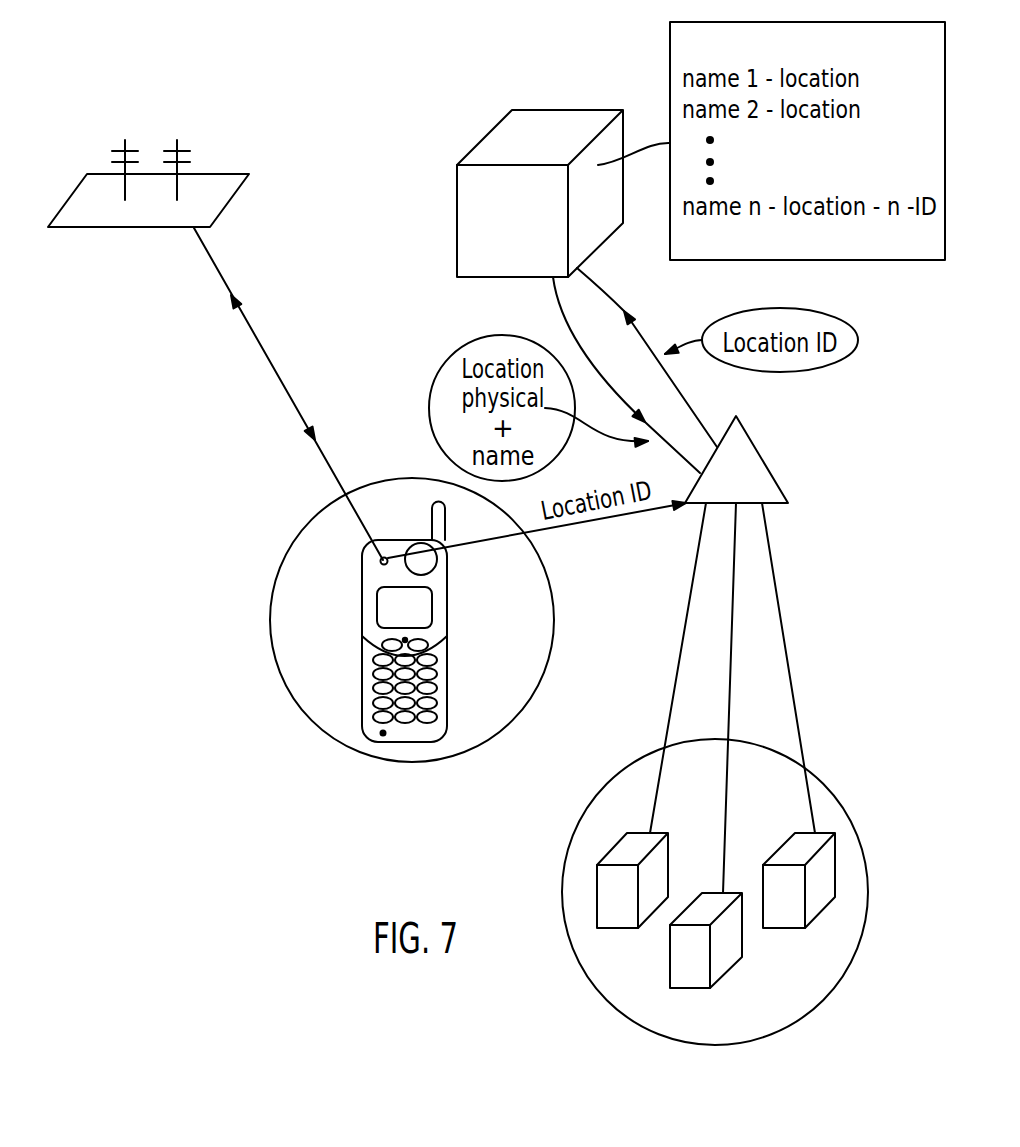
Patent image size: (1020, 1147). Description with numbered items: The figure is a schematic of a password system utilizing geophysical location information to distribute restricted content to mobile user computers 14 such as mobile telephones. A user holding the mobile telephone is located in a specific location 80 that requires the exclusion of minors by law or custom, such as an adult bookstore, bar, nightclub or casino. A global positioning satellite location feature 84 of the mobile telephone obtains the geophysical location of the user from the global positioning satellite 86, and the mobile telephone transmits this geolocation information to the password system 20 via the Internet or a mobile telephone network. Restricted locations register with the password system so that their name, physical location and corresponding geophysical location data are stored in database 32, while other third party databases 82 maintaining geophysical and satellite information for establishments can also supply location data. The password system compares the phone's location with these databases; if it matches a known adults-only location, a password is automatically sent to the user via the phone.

The mobile user computer 14 is at (447, 618).
The password system 20 is at (763, 457).
The database 32 is at (543, 108).
The specific location 80 is at (413, 762).
The third party databases 82 is at (713, 1045).
The global positioning satellite location feature 84 is at (380, 562).
The global positioning satellite 86 is at (222, 172).